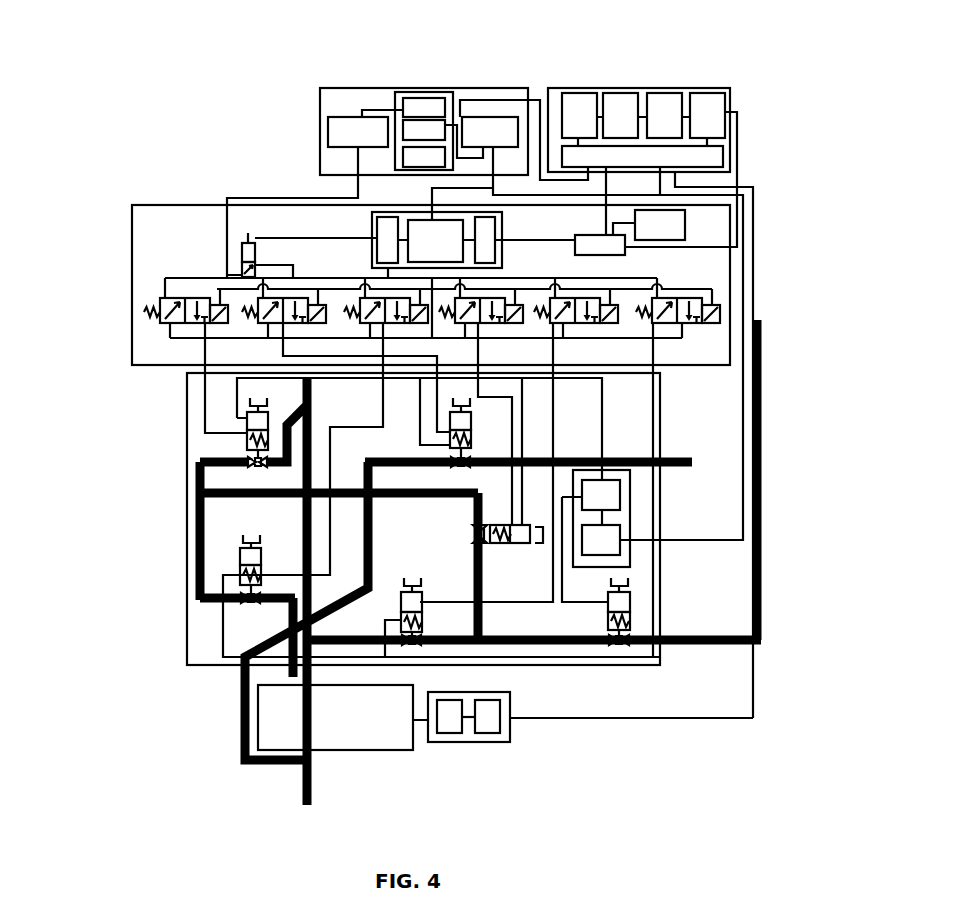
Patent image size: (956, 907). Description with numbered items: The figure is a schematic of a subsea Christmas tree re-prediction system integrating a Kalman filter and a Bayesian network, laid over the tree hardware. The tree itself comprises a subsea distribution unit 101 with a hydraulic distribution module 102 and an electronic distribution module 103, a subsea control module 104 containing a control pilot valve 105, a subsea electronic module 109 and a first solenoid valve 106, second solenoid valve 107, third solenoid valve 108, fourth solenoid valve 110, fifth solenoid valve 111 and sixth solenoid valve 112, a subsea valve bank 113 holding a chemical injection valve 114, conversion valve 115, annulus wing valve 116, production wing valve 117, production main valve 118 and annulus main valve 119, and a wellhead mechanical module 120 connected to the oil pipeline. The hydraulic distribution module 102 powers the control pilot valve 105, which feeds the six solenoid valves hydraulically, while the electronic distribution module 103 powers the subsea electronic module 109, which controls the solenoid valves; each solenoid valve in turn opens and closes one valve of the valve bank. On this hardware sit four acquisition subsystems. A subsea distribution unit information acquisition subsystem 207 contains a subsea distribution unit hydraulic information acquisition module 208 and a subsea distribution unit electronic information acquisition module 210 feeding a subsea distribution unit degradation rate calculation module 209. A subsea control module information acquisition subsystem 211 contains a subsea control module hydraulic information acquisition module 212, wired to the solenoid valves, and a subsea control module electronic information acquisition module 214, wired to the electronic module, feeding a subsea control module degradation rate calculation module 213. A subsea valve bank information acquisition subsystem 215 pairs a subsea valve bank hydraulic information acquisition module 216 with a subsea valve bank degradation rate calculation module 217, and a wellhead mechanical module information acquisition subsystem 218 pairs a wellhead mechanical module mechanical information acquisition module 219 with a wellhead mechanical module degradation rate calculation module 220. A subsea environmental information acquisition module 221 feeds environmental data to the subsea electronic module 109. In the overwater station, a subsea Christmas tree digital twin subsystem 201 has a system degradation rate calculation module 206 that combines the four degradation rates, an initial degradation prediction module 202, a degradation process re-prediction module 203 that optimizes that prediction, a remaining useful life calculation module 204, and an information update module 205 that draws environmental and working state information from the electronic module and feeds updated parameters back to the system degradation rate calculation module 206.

The subsea distribution unit 101 is at (332, 163).
The hydraulic distribution module 102 is at (338, 138).
The electronic distribution module 103 is at (495, 129).
The subsea control module 104 is at (148, 217).
The control pilot valve 105 is at (245, 250).
The first solenoid valve 106 is at (165, 313).
The second solenoid valve 107 is at (265, 313).
The third solenoid valve 108 is at (370, 312).
The subsea electronic module 109 is at (613, 243).
The fourth solenoid valve 110 is at (497, 307).
The fifth solenoid valve 111 is at (597, 312).
The sixth solenoid valve 112 is at (692, 310).
The subsea valve bank 113 is at (195, 412).
The chemical injection valve 114 is at (463, 423).
The conversion valve 115 is at (522, 533).
The annulus wing valve 116 is at (258, 423).
The production wing valve 117 is at (467, 698).
The production main valve 118 is at (413, 602).
The annulus main valve 119 is at (247, 557).
The wellhead mechanical module 120 is at (280, 705).
The subsea Christmas tree digital twin subsystem 201 is at (555, 92).
The initial degradation prediction module 202 is at (585, 103).
The degradation process re-prediction module 203 is at (628, 110).
The remaining useful life calculation module 204 is at (667, 120).
The information update module 205 is at (712, 127).
The system degradation rate calculation module 206 is at (715, 152).
The subsea distribution unit information acquisition subsystem 207 is at (418, 157).
The subsea distribution unit hydraulic information acquisition module 208 is at (415, 105).
The subsea distribution unit degradation rate calculation module 209 is at (420, 129).
The subsea distribution unit electronic information acquisition module 210 is at (400, 120).
The subsea control module information acquisition subsystem 211 is at (373, 263).
The subsea control module hydraulic information acquisition module 212 is at (382, 223).
The subsea control module degradation rate calculation module 213 is at (412, 253).
The subsea control module electronic information acquisition module 214 is at (485, 227).
The subsea valve bank information acquisition subsystem 215 is at (622, 477).
The subsea valve bank hydraulic information acquisition module 216 is at (613, 503).
The subsea valve bank degradation rate calculation module 217 is at (608, 540).
The wellhead mechanical module information acquisition subsystem 218 is at (618, 602).
The wellhead mechanical module mechanical information acquisition module 219 is at (487, 717).
The wellhead mechanical module degradation rate calculation module 220 is at (447, 715).
The subsea environmental information acquisition module 221 is at (657, 220).